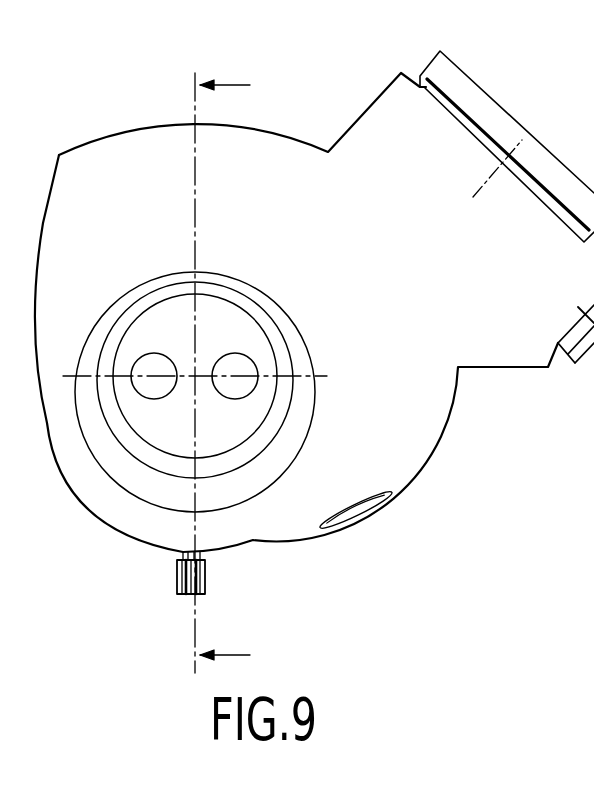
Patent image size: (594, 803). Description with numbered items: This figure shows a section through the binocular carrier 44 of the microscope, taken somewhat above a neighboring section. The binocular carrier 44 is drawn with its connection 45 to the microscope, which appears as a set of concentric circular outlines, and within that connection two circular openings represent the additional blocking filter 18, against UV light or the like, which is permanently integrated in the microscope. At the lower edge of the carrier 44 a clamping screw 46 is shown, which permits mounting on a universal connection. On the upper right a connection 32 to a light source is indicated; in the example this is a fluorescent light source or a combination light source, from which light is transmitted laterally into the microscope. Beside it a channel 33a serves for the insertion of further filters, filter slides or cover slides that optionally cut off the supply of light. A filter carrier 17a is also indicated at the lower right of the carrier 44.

The filter carrier 17a is at (365, 515).
The blocking filter 18 is at (154, 352).
The connection to a light source 32 is at (527, 145).
The channel 33a is at (580, 360).
The binocular carrier 44 is at (370, 295).
The connection to the microscope 45 is at (278, 410).
The clamping screw 46 is at (207, 572).